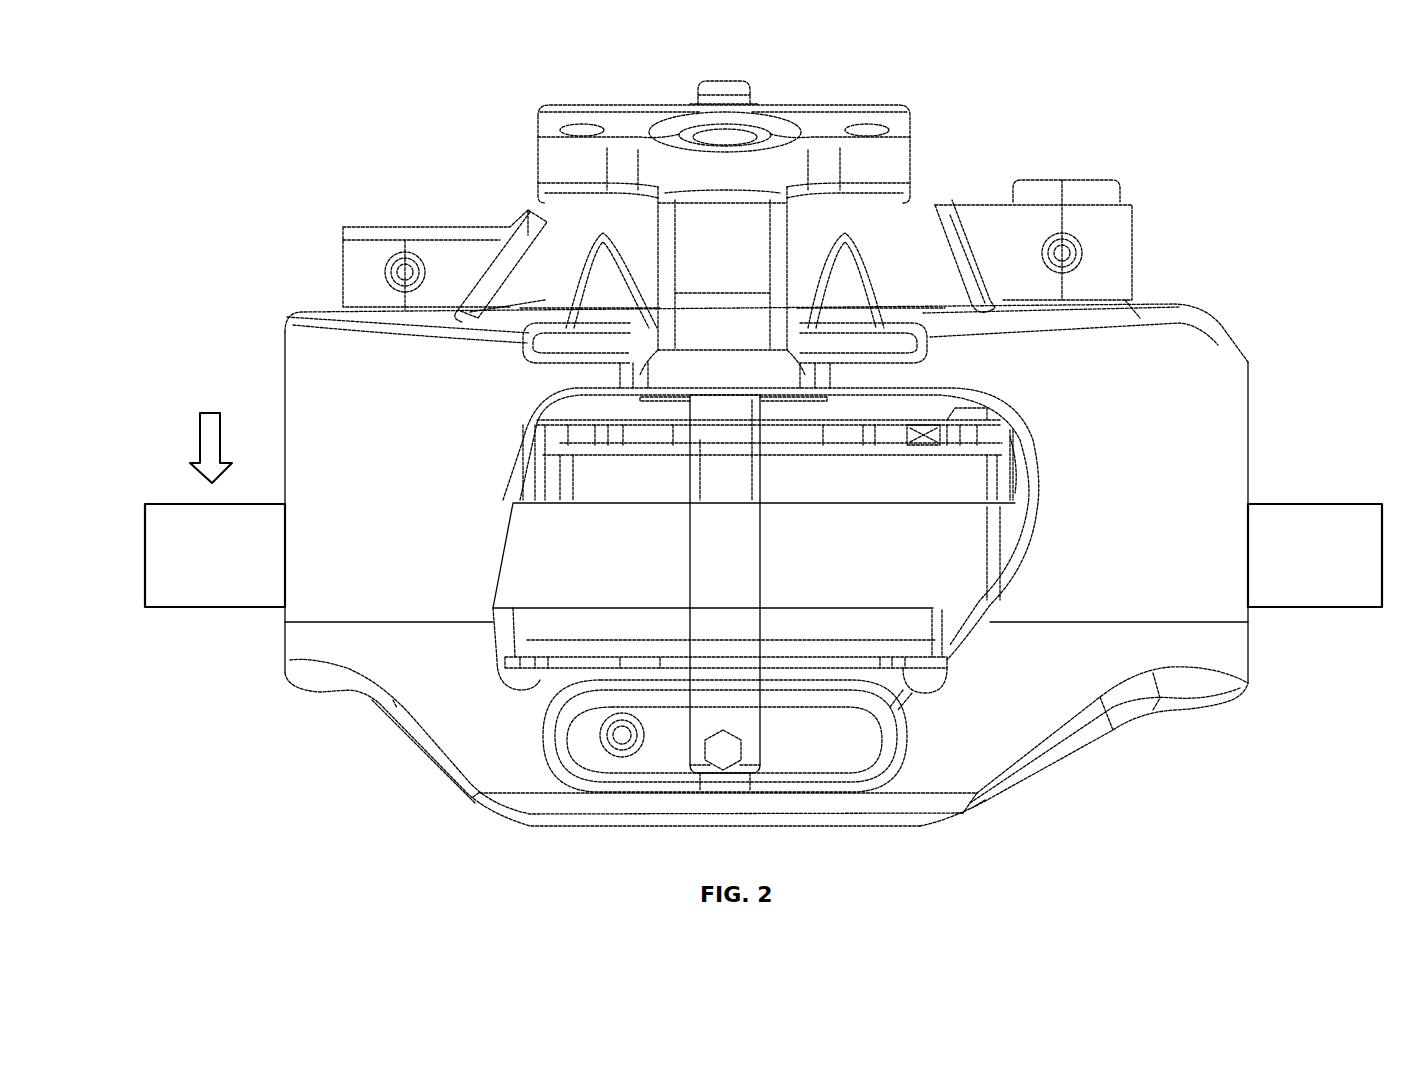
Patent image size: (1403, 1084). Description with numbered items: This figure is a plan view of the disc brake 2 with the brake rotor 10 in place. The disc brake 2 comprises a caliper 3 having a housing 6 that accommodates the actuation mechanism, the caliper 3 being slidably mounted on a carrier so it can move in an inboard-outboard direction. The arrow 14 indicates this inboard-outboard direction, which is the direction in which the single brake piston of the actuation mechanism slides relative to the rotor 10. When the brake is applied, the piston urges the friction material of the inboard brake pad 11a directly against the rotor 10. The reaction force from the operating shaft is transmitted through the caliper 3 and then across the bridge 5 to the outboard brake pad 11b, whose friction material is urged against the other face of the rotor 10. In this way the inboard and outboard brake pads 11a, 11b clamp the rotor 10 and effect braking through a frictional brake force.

The disc brake 2 is at (736, 503).
The caliper 3 is at (1195, 480).
The bridge 5 is at (1043, 712).
The housing 6 is at (887, 236).
The rotor 10 is at (1327, 568).
The inboard brake pad 11a is at (988, 445).
The outboard brake pad 11b is at (520, 667).
The arrow 14 is at (212, 430).